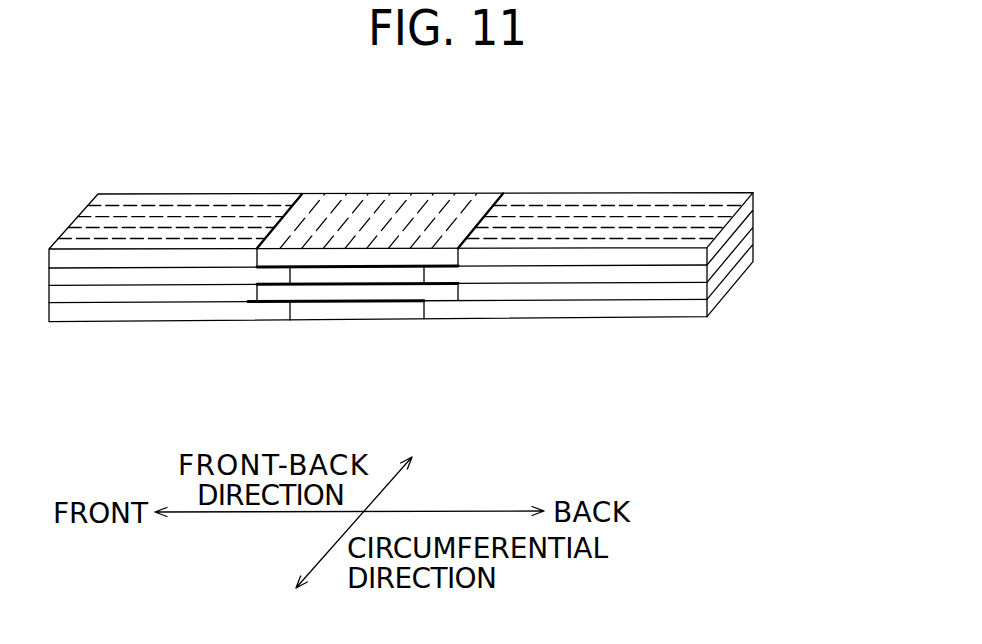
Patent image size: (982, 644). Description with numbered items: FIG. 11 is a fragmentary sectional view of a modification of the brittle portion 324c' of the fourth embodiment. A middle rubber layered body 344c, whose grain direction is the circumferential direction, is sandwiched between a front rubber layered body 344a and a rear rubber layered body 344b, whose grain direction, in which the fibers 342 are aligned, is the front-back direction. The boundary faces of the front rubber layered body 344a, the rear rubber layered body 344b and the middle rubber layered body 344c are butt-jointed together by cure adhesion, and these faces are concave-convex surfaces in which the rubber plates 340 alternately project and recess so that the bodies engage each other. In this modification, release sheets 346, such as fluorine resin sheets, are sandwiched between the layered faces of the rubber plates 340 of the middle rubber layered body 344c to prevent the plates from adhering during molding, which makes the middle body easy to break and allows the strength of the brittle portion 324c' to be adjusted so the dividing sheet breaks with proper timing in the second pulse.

The fibers 342 is at (138, 205).
The front rubber layered body 344a is at (210, 194).
The rear rubber layered body 344b is at (615, 193).
The middle rubber layered body 344c is at (355, 194).
The rubber plates 340 is at (753, 220).
The release sheets 346 is at (300, 268).
The brittle portion 324c' is at (401, 305).